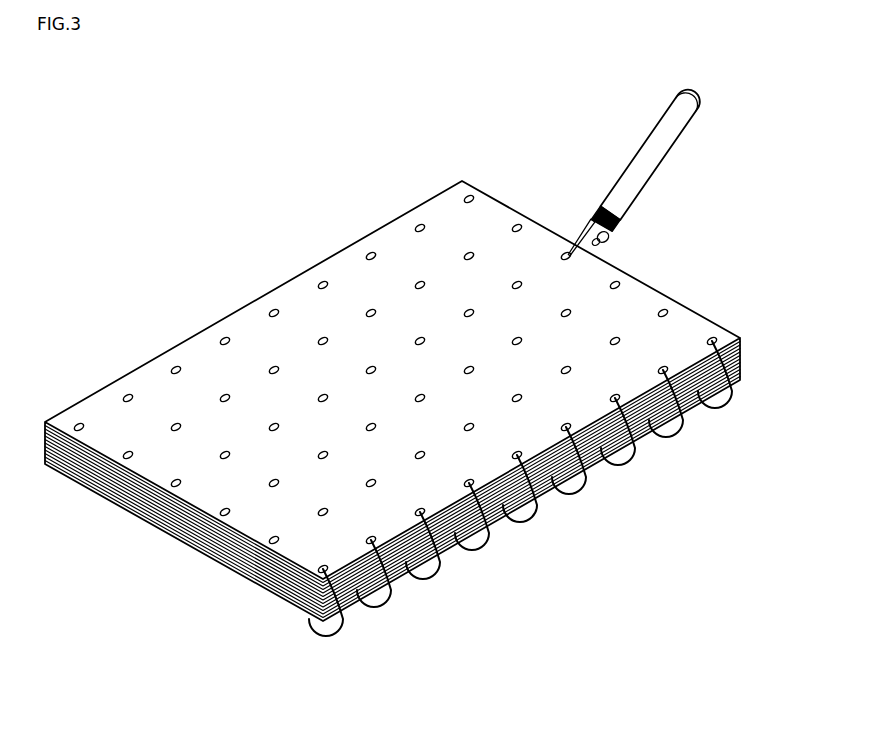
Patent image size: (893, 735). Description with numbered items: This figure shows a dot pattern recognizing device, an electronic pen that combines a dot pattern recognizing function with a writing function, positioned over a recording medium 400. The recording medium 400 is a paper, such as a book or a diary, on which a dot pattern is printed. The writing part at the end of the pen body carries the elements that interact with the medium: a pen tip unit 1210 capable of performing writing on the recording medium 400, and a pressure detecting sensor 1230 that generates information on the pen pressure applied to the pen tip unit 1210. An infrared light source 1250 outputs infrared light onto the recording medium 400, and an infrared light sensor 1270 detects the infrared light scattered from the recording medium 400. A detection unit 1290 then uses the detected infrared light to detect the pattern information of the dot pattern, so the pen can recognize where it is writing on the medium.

The recording medium 400 is at (383, 147).
The pen tip unit 1210 is at (552, 230).
The pressure detecting sensor 1230 is at (589, 221).
The infrared light source 1250 is at (608, 241).
The infrared light sensor 1270 is at (596, 245).
The detection unit 1290 is at (622, 220).